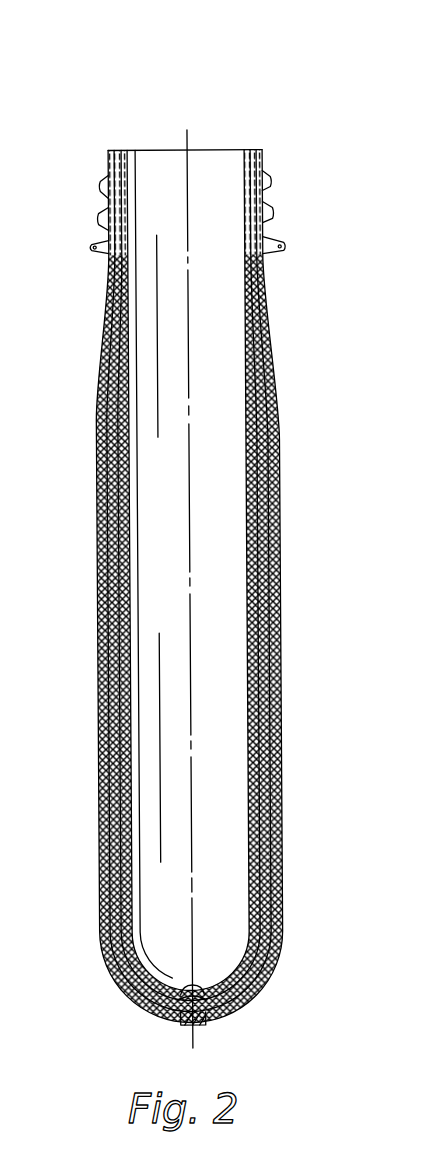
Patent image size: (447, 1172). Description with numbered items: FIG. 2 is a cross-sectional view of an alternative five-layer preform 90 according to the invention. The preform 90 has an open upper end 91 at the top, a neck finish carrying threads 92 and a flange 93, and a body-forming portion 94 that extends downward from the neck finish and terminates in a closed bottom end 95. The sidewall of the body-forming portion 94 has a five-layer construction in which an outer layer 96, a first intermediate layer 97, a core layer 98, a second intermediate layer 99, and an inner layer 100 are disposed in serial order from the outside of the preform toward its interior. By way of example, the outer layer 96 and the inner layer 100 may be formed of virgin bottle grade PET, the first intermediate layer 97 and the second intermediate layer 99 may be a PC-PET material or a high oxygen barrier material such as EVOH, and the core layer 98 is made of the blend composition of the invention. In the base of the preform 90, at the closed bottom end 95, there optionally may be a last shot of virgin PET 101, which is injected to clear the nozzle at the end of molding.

The five-layer preform 90 is at (281, 342).
The open upper end 91 is at (216, 150).
The threads 92 is at (264, 187).
The flange 93 is at (285, 255).
The body-forming portion 94 is at (275, 485).
The closed bottom end 95 is at (246, 999).
The outer layer 96 is at (101, 427).
The first intermediate layer 97 is at (105, 440).
The core layer 98 is at (110, 469).
The second intermediate layer 99 is at (103, 504).
The inner layer 100 is at (110, 547).
The last shot of virgin PET 101 is at (214, 1017).